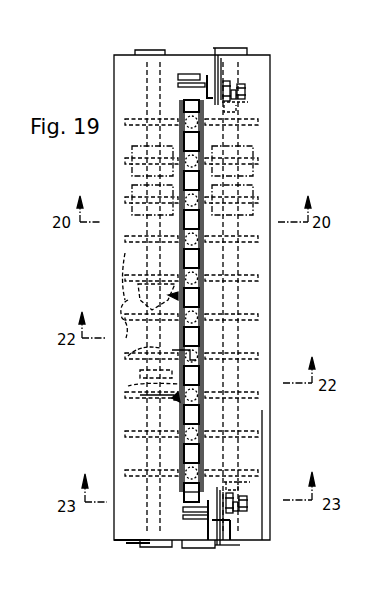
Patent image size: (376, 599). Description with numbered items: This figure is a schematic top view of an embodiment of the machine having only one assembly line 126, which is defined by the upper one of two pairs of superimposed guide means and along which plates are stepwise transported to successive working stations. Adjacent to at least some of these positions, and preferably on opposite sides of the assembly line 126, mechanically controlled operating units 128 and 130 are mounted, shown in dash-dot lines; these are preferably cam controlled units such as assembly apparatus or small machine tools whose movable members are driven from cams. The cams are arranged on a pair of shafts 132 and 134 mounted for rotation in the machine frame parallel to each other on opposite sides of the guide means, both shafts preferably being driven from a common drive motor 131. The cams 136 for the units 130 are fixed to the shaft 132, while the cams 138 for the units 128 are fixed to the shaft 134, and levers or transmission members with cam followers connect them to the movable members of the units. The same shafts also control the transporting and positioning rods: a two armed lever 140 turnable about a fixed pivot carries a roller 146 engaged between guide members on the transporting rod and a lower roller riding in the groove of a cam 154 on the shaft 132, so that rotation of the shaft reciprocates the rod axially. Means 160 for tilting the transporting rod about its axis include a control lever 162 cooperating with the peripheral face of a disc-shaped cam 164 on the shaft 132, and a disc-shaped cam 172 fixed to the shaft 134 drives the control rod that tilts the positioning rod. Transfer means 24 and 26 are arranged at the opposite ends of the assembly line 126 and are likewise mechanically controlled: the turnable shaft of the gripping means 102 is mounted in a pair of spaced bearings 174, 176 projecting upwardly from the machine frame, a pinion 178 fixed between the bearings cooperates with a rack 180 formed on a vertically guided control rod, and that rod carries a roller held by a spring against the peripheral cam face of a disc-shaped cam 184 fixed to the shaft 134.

The gripping means 102 is at (180, 66).
The transfer means 24 is at (205, 66).
The bearing 174 is at (226, 84).
The bearing 176 is at (242, 86).
The disc-shaped cam 184 is at (248, 102).
The rack 180 is at (236, 112).
The operating unit 130 is at (123, 181).
The operating unit 128 is at (259, 180).
The cam 138 is at (257, 246).
The cam 136 is at (115, 252).
The two armed lever 140 is at (150, 292).
The roller 146 is at (126, 298).
The assembly line 126 is at (218, 303).
The disc-shaped cam 172 is at (254, 370).
The cam 154 is at (125, 352).
The control lever 162 is at (138, 372).
The disc-shaped cam 164 is at (120, 388).
The means for tilting the transporting rod 160 is at (140, 415).
The shaft 132 is at (128, 426).
The shaft 134 is at (265, 418).
The pinion 178 is at (245, 492).
The common drive motor 131 is at (175, 530).
The transfer means 26 is at (208, 530).